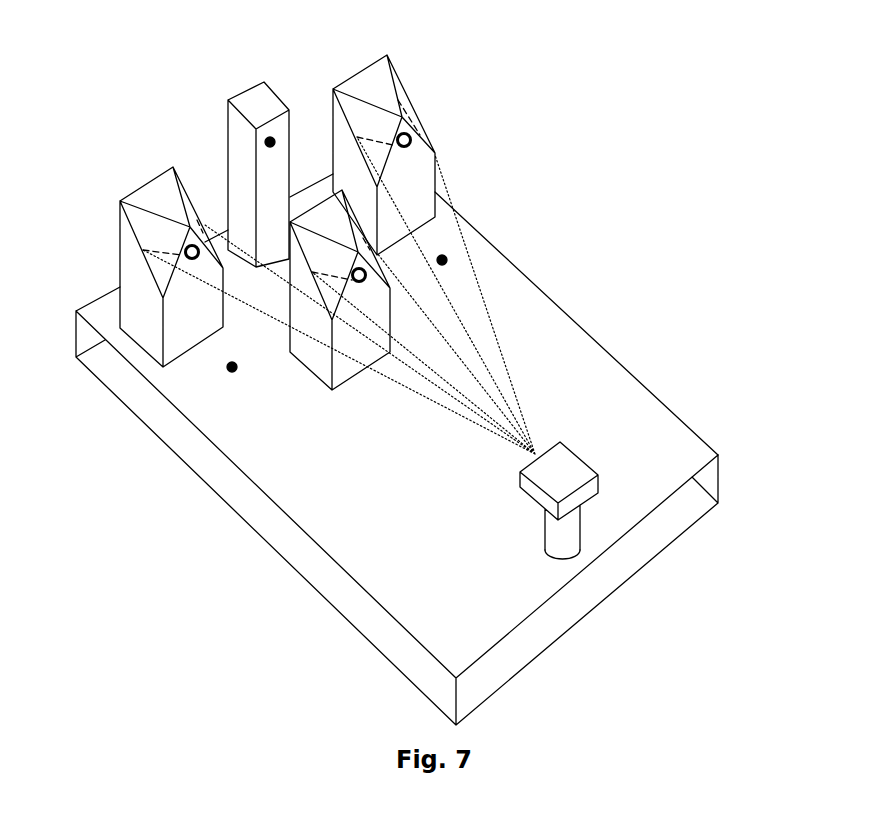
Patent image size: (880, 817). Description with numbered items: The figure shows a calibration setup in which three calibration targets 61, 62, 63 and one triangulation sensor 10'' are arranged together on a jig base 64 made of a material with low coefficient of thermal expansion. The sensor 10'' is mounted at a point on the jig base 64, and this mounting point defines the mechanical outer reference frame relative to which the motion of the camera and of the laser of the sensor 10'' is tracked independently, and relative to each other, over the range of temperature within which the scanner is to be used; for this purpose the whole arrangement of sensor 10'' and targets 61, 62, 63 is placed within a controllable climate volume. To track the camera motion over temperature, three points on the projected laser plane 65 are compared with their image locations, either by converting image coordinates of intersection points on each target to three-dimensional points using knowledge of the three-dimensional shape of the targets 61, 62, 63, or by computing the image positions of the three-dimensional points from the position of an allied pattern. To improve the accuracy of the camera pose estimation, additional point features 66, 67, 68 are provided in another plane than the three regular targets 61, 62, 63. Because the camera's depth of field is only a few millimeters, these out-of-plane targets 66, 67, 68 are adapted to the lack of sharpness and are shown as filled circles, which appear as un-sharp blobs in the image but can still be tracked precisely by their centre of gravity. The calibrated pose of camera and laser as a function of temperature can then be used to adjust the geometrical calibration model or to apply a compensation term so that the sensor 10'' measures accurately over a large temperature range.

The calibration target 61 is at (152, 198).
The calibration target 62 is at (318, 217).
The calibration target 63 is at (370, 78).
The jig base 64 is at (580, 363).
The projected laser plane 65 is at (440, 187).
The point feature 66 is at (231, 367).
The point feature 67 is at (268, 137).
The point feature 68 is at (442, 260).
The triangulation sensor 10'' is at (652, 463).